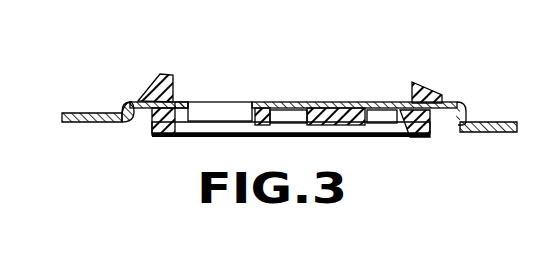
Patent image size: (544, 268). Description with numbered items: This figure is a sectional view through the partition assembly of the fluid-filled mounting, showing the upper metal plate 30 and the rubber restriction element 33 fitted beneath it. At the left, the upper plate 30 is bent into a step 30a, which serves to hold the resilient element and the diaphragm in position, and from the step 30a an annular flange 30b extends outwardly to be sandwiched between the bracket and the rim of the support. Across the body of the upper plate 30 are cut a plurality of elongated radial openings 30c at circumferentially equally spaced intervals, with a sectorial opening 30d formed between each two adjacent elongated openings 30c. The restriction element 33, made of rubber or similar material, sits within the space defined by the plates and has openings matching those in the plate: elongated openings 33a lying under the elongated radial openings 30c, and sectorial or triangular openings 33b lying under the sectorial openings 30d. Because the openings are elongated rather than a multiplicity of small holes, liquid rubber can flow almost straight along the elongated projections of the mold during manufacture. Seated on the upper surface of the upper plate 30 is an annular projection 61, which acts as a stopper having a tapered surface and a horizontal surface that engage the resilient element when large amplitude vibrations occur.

The upper metal plate 30 is at (311, 90).
The step 30a is at (125, 97).
The annular flange 30b is at (82, 112).
The elongated radial opening 30c is at (198, 100).
The sectorial opening 30d is at (378, 118).
The restriction element 33 is at (161, 136).
The elongated opening 33a is at (210, 102).
The sectorial opening 33b is at (398, 104).
The annular projection 61 is at (443, 93).